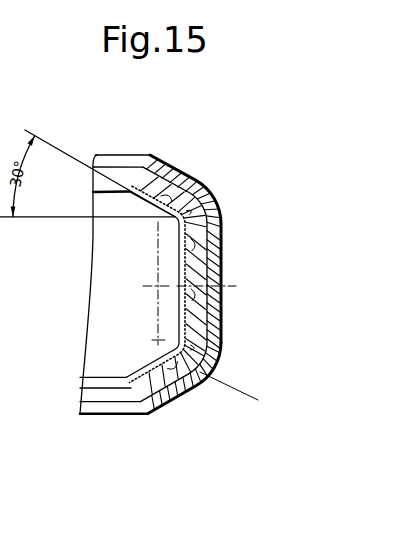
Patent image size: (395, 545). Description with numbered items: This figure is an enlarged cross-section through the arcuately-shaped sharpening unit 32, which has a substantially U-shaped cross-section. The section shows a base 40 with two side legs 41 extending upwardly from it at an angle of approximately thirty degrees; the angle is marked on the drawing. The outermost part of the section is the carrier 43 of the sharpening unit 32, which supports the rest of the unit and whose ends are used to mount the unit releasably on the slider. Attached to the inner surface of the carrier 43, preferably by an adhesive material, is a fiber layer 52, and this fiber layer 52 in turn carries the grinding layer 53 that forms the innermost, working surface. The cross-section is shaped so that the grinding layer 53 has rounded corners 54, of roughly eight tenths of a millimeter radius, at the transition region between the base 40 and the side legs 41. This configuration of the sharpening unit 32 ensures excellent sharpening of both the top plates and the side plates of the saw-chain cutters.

The sharpening unit 32 is at (116, 128).
The base 40 is at (213, 262).
The side legs 41 is at (188, 183).
The carrier 43 is at (199, 381).
The fiber layer 52 is at (135, 400).
The grinding layer 53 is at (139, 369).
The rounded corners 54 is at (174, 219).